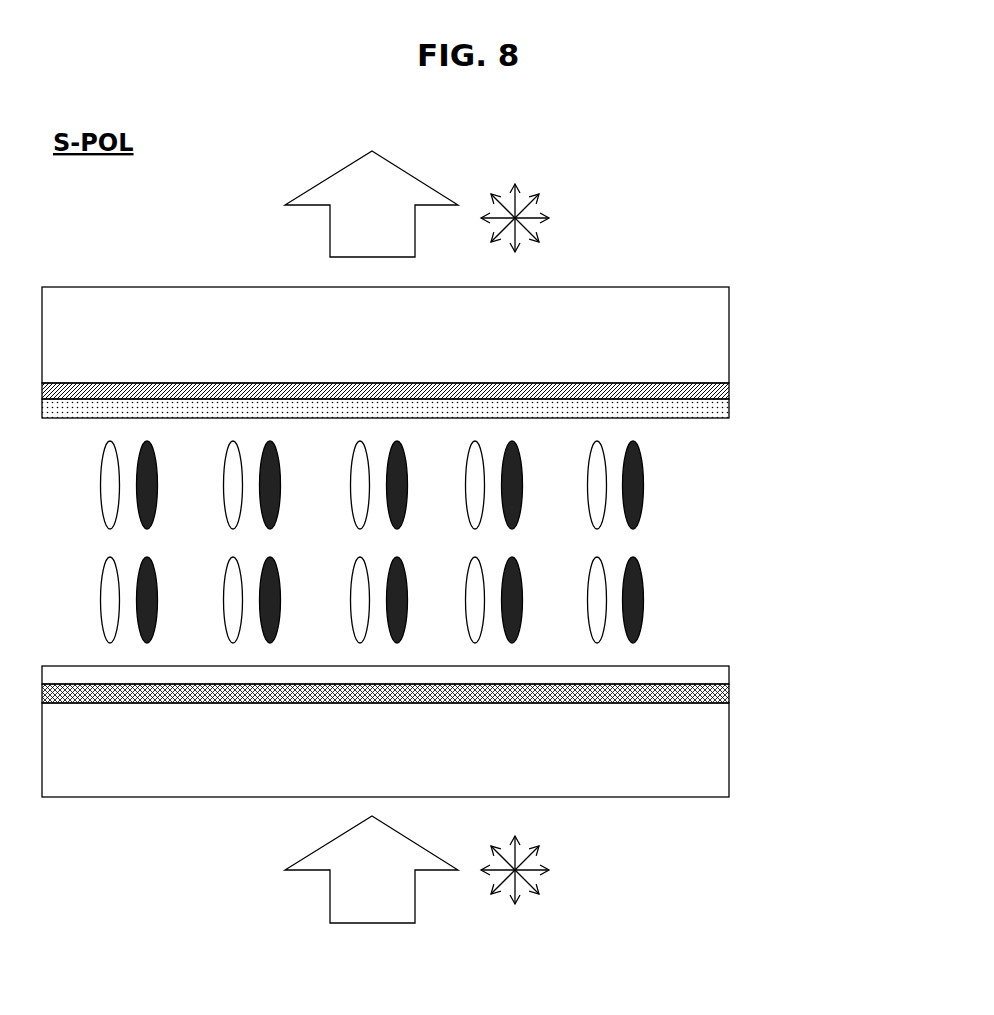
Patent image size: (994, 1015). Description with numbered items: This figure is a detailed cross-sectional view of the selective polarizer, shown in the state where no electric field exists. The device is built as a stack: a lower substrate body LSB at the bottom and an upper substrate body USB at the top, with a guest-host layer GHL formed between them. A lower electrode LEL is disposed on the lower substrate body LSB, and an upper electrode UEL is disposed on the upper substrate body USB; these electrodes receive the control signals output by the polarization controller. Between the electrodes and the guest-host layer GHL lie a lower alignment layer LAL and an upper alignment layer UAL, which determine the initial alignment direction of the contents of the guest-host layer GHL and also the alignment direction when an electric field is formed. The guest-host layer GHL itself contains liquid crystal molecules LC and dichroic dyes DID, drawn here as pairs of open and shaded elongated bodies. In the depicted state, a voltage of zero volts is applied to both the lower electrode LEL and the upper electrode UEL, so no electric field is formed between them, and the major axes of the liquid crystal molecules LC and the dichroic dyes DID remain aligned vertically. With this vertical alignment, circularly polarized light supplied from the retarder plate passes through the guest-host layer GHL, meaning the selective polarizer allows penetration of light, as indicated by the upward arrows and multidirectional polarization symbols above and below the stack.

The upper substrate body USB is at (718, 338).
The upper electrode UEL is at (722, 389).
The upper alignment layer UAL is at (722, 413).
The guest-host layer GHL is at (491, 542).
The liquid crystal molecules LC is at (597, 586).
The dichroic dyes DID is at (730, 655).
The lower alignment layer LAL is at (718, 674).
The lower electrode LEL is at (725, 699).
The lower substrate body LSB is at (718, 766).